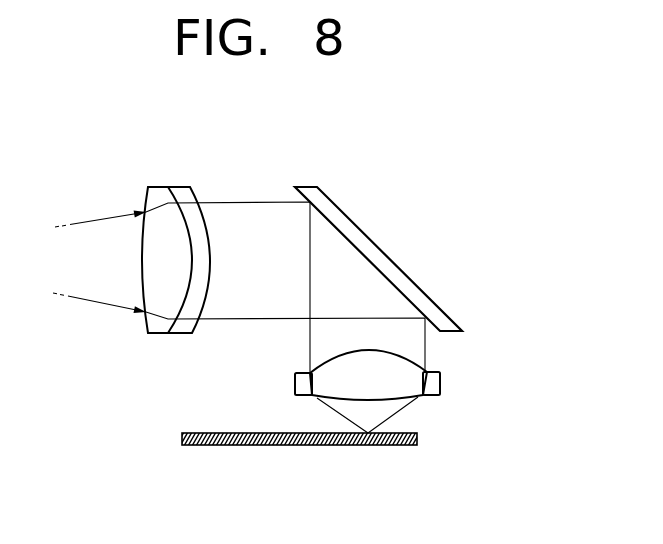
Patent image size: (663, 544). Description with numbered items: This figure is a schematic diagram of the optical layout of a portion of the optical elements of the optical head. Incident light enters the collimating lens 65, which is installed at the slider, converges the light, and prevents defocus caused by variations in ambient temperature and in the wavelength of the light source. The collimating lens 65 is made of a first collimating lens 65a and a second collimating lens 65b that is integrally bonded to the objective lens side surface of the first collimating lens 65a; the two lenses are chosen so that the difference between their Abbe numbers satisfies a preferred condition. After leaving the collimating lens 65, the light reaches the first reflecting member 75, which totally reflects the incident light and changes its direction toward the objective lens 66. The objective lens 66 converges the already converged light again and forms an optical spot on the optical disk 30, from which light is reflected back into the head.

The collimating lens 65 is at (149, 271).
The first collimating lens 65a is at (150, 335).
The second collimating lens 65b is at (185, 335).
The first reflecting member 75 is at (378, 248).
The objective lens 66 is at (433, 395).
The optical disk 30 is at (348, 447).